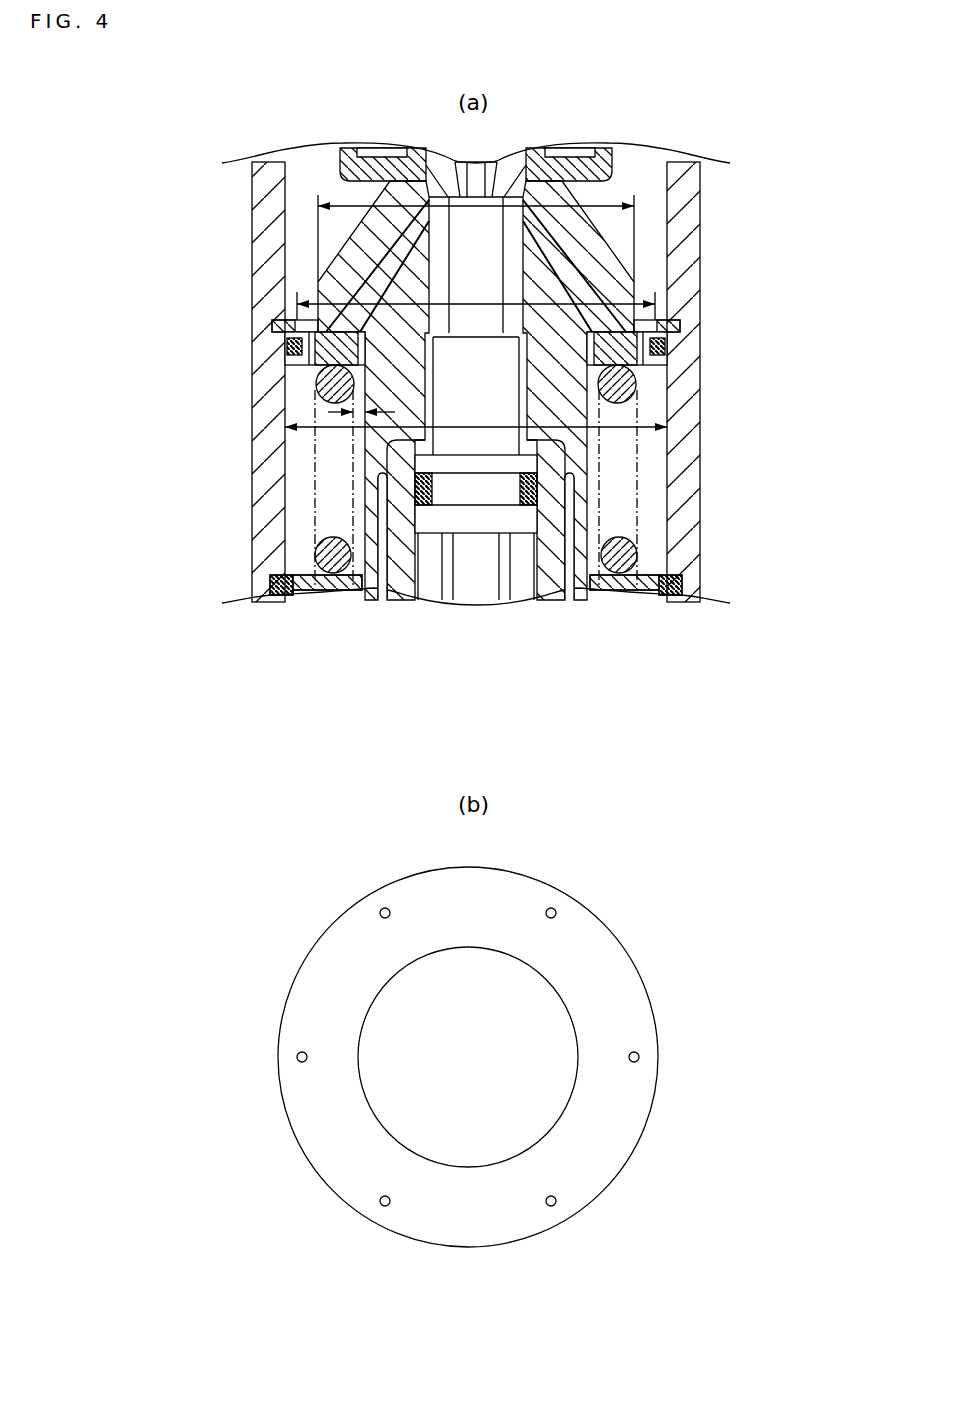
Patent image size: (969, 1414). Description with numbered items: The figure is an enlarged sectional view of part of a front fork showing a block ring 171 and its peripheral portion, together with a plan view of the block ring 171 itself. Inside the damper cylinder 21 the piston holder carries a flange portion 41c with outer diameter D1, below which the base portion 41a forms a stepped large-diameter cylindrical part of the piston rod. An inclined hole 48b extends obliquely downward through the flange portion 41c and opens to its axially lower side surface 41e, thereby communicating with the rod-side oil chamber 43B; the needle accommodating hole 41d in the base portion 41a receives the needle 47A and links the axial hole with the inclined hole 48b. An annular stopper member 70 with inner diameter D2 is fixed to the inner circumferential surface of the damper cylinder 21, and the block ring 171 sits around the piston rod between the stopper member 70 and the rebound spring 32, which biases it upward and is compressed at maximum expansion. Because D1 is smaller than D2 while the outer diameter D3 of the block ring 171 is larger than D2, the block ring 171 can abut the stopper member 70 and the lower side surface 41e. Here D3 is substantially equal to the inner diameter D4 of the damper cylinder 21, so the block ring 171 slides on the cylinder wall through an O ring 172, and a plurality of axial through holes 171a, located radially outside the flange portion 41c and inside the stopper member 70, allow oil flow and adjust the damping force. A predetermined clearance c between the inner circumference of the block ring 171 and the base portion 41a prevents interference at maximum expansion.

The damper cylinder 21 is at (268, 458).
The rebound spring 32 is at (327, 528).
The base portion 41a is at (583, 515).
The flange portion 41c is at (605, 278).
The needle accommodating hole 41d is at (513, 368).
The axially lower side surface 41e is at (335, 380).
The rod-side oil chamber 43B is at (332, 494).
The needle 47A is at (478, 237).
The inclined hole 48b is at (388, 272).
The stopper member 70 is at (284, 327).
The block ring 171 is at (660, 367).
The axial through holes 171a is at (291, 347).
The O ring 172 is at (675, 329).
The outer diameter of the flange portion D1 is at (611, 199).
The inner diameter of the stopper member D2 is at (318, 296).
The outer diameter of the block ring D3 is at (555, 441).
The inner diameter of the damper cylinder D4 is at (660, 430).
The clearance c is at (330, 400).